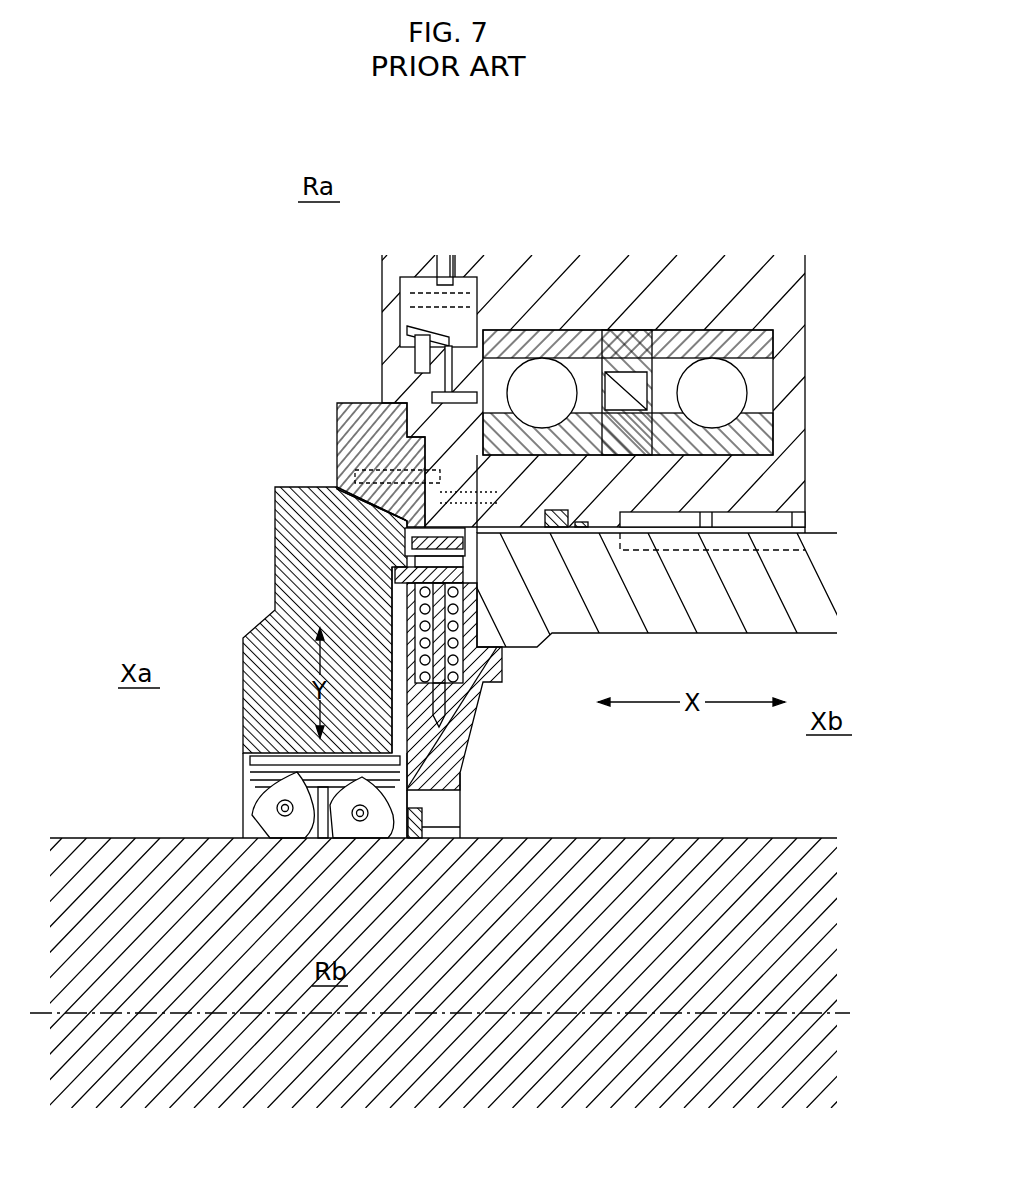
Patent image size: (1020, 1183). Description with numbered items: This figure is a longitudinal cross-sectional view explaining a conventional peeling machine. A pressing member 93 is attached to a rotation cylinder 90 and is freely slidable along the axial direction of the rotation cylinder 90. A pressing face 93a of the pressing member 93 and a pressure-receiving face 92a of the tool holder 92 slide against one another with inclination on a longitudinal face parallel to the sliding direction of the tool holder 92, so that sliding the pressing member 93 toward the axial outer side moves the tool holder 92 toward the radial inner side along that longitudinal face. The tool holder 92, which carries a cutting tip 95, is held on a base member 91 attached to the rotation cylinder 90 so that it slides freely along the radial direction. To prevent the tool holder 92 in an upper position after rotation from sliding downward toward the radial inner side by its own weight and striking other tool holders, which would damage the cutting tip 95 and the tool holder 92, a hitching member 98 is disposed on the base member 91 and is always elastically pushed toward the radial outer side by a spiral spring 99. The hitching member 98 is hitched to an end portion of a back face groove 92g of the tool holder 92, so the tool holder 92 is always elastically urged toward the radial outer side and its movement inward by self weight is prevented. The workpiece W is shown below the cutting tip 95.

The rotation cylinder 90 is at (680, 583).
The base member 91 is at (480, 707).
The tool holder 92 is at (282, 620).
The pressure-receiving face 92a is at (362, 522).
The back face groove 92g is at (395, 607).
The pressing member 93 is at (336, 436).
The pressing face 93a is at (318, 490).
The cutting tip 95 is at (282, 827).
The hitching member 98 is at (463, 573).
The spiral spring 99 is at (460, 650).
The workpiece W is at (120, 835).